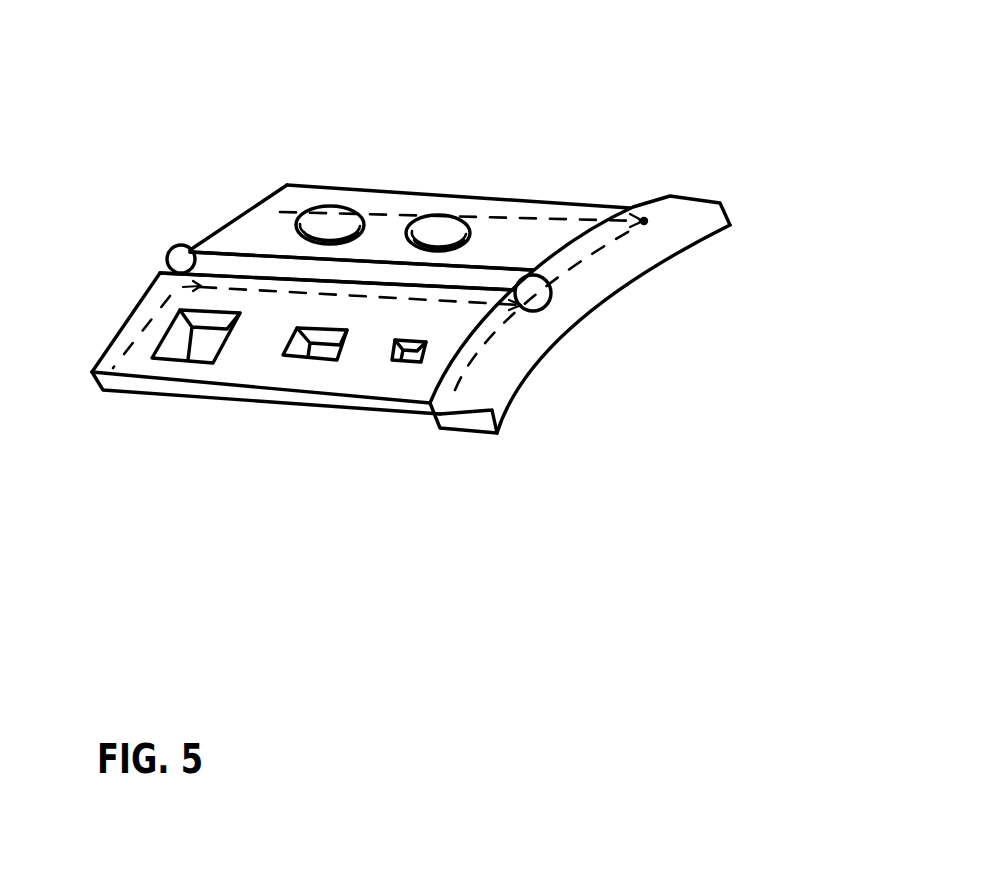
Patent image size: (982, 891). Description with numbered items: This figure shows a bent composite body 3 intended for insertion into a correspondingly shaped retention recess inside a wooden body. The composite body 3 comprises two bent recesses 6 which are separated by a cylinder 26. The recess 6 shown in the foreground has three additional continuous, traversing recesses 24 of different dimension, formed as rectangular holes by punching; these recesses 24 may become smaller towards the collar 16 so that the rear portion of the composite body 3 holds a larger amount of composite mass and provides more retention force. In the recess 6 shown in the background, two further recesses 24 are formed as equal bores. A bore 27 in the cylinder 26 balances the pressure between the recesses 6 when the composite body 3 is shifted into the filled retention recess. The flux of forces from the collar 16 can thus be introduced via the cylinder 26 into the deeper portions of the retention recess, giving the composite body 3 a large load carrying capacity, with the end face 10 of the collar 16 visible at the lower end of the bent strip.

The composite body 3 is at (724, 382).
The recess 6 is at (443, 158).
The end face 10 is at (498, 453).
The collar 16 is at (675, 212).
The recess 24 is at (330, 220).
The cylinder 26 is at (290, 268).
The bore 27 is at (320, 278).